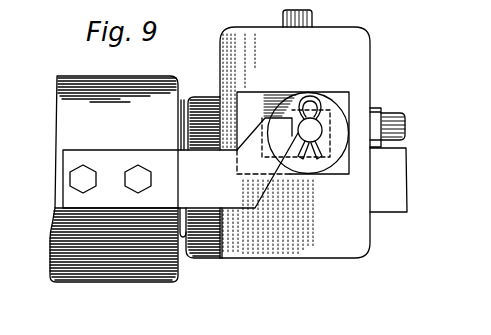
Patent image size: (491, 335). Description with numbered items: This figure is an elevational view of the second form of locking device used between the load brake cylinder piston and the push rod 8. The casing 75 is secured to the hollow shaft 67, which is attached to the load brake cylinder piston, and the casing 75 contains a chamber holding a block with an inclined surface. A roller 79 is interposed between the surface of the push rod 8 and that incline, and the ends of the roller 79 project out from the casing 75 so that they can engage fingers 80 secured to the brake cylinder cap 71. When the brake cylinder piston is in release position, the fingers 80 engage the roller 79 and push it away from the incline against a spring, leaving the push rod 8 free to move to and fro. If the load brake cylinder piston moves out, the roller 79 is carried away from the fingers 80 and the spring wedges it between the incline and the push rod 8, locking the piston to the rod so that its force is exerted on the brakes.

The brake cylinder cap 71 is at (118, 92).
The hollow shaft 67 is at (184, 112).
The fingers 80 is at (113, 167).
The casing 75 is at (347, 43).
The roller 79 is at (313, 128).
The push rod 8 is at (385, 172).